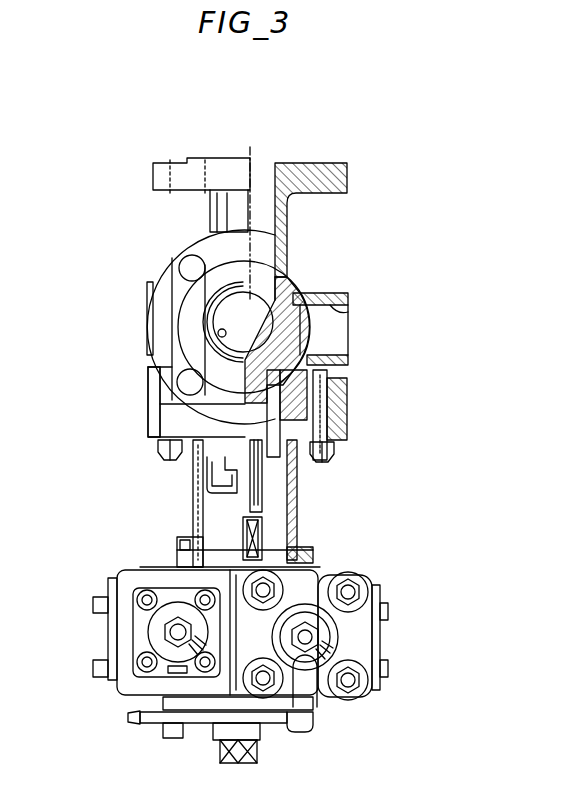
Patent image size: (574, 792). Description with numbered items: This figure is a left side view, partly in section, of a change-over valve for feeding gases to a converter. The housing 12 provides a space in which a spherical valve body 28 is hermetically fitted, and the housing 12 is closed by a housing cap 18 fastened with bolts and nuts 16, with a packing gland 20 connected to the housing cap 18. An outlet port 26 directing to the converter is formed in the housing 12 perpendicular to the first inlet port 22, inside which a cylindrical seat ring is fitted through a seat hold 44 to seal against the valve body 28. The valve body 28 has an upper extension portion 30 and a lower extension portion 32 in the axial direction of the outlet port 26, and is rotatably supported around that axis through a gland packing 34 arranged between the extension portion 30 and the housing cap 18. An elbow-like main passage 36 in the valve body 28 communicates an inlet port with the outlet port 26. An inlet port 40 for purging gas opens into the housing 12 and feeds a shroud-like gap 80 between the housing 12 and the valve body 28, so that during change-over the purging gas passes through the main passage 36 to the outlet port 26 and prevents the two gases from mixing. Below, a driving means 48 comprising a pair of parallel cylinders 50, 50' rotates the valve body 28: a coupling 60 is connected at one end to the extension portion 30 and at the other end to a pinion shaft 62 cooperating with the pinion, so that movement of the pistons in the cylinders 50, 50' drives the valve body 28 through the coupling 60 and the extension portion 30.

The housing 12 is at (178, 148).
The outlet port 26 is at (268, 165).
The lower extension portion 32 is at (253, 275).
The spherical valve body 28 is at (300, 297).
The elbow-like main passage 36 is at (259, 334).
The seat hold 44 is at (210, 322).
The first inlet port 22 is at (218, 334).
The inlet port for purging gas 40 is at (348, 318).
The shroud-like gap 80 is at (328, 382).
The housing cap 18 is at (157, 408).
The bolts and nuts 16 is at (158, 438).
The gland packing 34 is at (292, 453).
The upper extension portion 30 is at (273, 468).
The packing gland 20 is at (210, 457).
The coupling 60 is at (267, 532).
The pinion shaft 62 is at (312, 555).
The driving means 48 is at (416, 563).
The cylinder 50 is at (138, 632).
The cylinder 50' is at (354, 637).